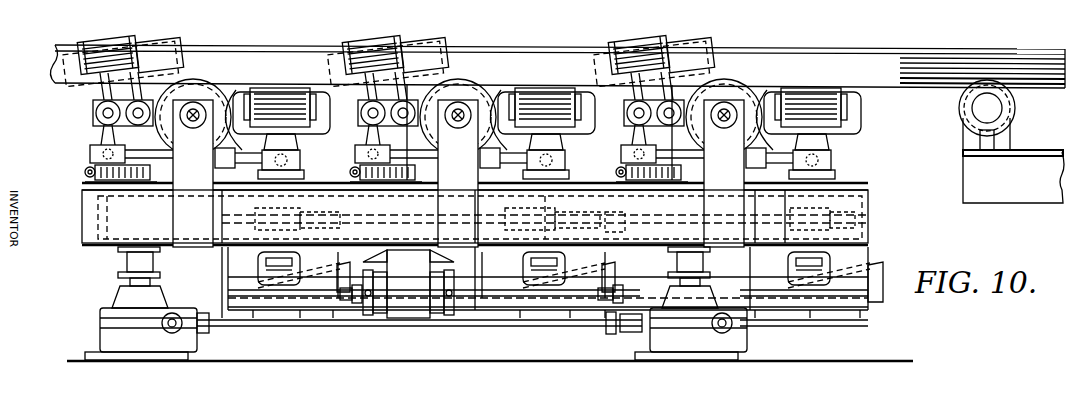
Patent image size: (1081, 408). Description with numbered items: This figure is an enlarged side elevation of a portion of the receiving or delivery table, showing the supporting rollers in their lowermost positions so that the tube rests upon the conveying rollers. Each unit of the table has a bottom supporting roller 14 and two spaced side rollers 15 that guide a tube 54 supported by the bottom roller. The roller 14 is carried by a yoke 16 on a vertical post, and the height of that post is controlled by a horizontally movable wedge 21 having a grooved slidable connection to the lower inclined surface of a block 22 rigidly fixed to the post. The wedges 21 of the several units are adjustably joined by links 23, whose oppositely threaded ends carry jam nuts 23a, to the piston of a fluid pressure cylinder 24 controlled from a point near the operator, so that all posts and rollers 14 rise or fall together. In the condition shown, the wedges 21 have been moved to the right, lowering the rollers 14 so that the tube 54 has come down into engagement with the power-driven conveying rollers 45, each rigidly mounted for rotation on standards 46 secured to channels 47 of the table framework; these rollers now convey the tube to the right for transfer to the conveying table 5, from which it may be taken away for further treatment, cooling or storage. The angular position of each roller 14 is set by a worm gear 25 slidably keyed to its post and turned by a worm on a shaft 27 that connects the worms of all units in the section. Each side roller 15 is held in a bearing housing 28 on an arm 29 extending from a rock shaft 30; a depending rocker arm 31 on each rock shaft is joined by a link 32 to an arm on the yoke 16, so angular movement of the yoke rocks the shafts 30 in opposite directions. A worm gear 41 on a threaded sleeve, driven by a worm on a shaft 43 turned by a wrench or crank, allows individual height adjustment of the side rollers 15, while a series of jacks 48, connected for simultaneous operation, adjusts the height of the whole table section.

The conveying table 5 is at (1003, 197).
The bottom supporting roller 14 is at (283, 92).
The side rollers 15 is at (420, 46).
The yoke 16 is at (318, 140).
The wedge 21 is at (612, 282).
The block 22 is at (258, 277).
The links 23 is at (476, 290).
The jam nuts 23a is at (358, 304).
The fluid pressure cylinder 24 is at (415, 308).
The worm gear 25 is at (256, 214).
The shaft 27 is at (621, 211).
The bearing housing 28 is at (170, 62).
The arm 29 is at (95, 78).
The rock shaft 30 is at (98, 123).
The rocker arm 31 is at (100, 135).
The link 32 is at (86, 168).
The worm gear 41 is at (152, 190).
The shaft 43 is at (92, 175).
The conveying roller 45 is at (207, 95).
The standards 46 is at (176, 214).
The channels 47 is at (88, 232).
The jacks 48 is at (128, 298).
The tube 54 is at (823, 52).